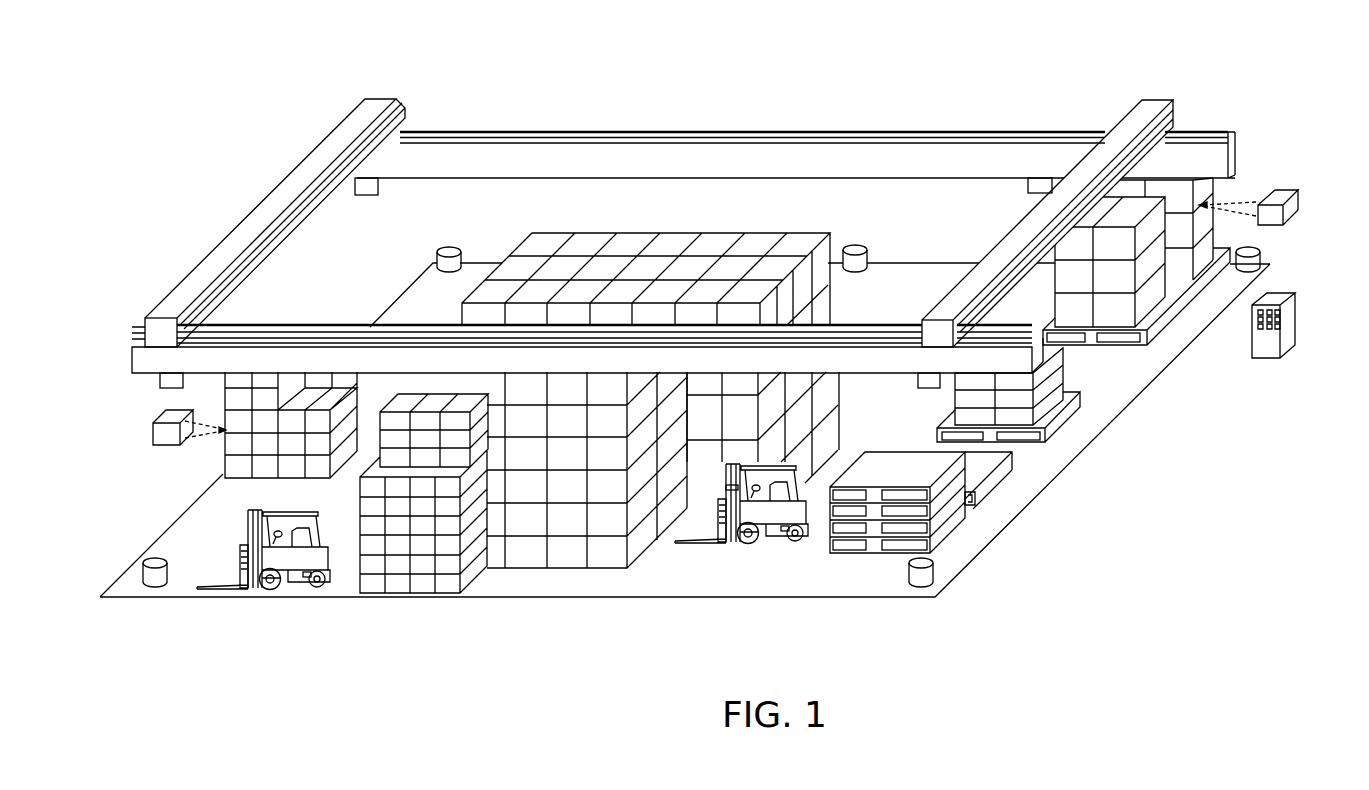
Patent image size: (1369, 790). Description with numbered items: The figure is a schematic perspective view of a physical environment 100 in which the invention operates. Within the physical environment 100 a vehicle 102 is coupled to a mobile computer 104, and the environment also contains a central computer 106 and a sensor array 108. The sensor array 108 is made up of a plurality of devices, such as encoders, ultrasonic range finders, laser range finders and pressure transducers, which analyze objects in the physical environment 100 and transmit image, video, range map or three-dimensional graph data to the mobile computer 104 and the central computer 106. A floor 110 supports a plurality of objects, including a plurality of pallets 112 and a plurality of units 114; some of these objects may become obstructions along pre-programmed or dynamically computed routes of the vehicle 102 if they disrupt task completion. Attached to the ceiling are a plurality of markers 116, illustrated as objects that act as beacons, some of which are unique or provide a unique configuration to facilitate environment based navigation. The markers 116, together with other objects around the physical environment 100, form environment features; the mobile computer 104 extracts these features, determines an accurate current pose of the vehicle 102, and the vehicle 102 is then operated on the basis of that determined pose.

The physical environment 100 is at (1016, 23).
The vehicle 102 is at (297, 577).
The mobile computer 104 is at (720, 518).
The central computer 106 is at (1268, 358).
The sensor array 108 is at (730, 488).
The floor 110 is at (842, 574).
The pallets 112 is at (1062, 417).
The units 114 is at (153, 433).
The markers 116 is at (160, 563).